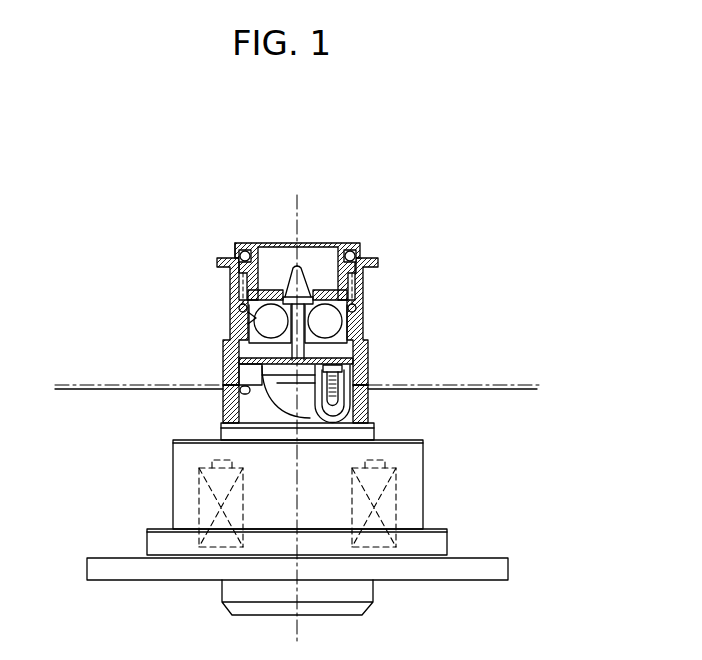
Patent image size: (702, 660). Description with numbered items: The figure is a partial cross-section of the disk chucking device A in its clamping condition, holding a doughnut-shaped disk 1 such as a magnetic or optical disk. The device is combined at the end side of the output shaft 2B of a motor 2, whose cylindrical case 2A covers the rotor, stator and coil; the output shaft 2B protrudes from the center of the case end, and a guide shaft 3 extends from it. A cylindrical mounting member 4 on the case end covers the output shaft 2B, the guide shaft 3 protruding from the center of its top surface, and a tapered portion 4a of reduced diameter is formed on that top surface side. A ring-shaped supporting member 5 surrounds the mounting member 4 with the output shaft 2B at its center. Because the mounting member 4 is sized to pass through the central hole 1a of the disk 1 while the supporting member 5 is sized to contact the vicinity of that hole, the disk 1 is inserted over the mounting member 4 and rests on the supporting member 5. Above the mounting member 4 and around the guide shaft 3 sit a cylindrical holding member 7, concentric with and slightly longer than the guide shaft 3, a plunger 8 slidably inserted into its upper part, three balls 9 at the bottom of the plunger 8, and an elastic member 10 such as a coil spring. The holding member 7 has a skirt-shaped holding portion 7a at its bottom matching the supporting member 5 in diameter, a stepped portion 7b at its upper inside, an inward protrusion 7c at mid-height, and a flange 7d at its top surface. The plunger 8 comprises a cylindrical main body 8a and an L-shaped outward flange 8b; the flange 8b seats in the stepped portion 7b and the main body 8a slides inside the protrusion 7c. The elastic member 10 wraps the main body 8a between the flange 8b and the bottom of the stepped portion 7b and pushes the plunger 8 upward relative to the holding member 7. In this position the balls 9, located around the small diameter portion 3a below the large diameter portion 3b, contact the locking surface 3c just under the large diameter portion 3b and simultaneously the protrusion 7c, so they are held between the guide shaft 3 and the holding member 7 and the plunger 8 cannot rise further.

The disk chucking device A is at (293, 313).
The disk 1 is at (303, 366).
The central hole 1a is at (222, 397).
The motor 2 is at (301, 510).
The base body 2A is at (411, 513).
The output shaft 2B is at (371, 411).
The guide shaft 3 is at (257, 270).
The small diameter portion 3a is at (305, 277).
The large diameter portion 3b is at (289, 277).
The locking surface 3c is at (228, 343).
The mounting member 4 is at (247, 422).
The tapered portion 4a is at (224, 367).
The supporting member 5 is at (219, 409).
The holding member 7 is at (304, 305).
The holding portion 7a is at (374, 362).
The stepped portion 7b is at (365, 273).
The protrusion 7c is at (250, 319).
The flange 7d is at (369, 262).
The plunger 8 is at (292, 246).
The main body 8a is at (334, 268).
The flange 8b is at (235, 248).
The balls 9 is at (356, 303).
The elastic member 10 is at (238, 282).